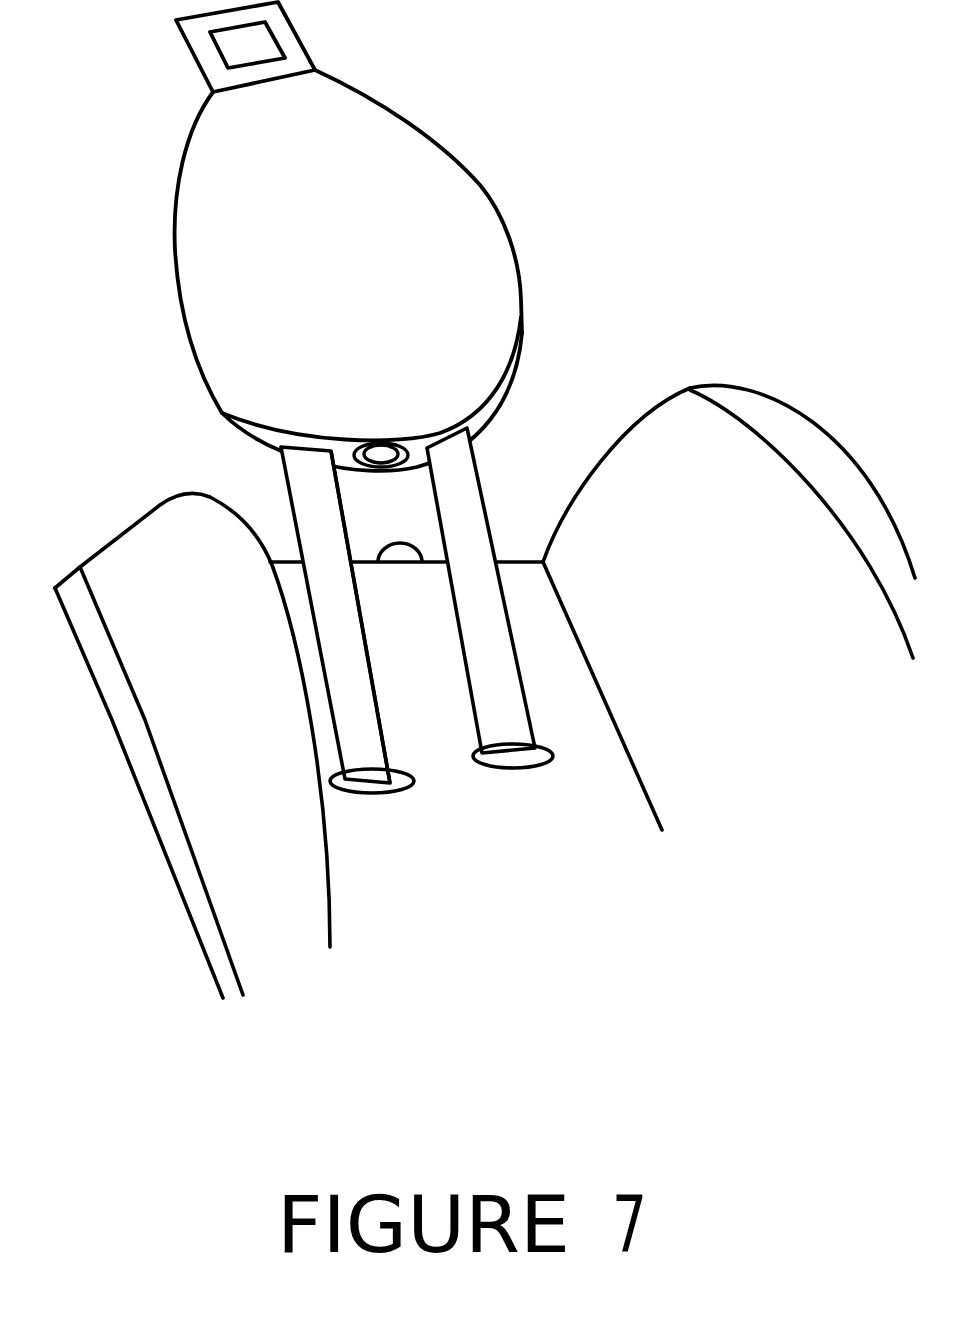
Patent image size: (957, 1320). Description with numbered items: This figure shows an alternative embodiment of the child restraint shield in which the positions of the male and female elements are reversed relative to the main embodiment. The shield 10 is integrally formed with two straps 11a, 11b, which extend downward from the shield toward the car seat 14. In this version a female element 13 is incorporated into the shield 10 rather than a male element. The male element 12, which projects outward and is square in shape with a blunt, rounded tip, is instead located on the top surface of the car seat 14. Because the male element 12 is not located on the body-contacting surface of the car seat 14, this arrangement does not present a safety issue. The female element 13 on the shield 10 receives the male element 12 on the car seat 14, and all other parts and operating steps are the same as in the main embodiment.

The shield 10 is at (433, 138).
The strap 11a is at (385, 698).
The strap 11b is at (538, 690).
The male element 12 is at (400, 565).
The female element 13 is at (373, 437).
The car seat 14 is at (745, 377).